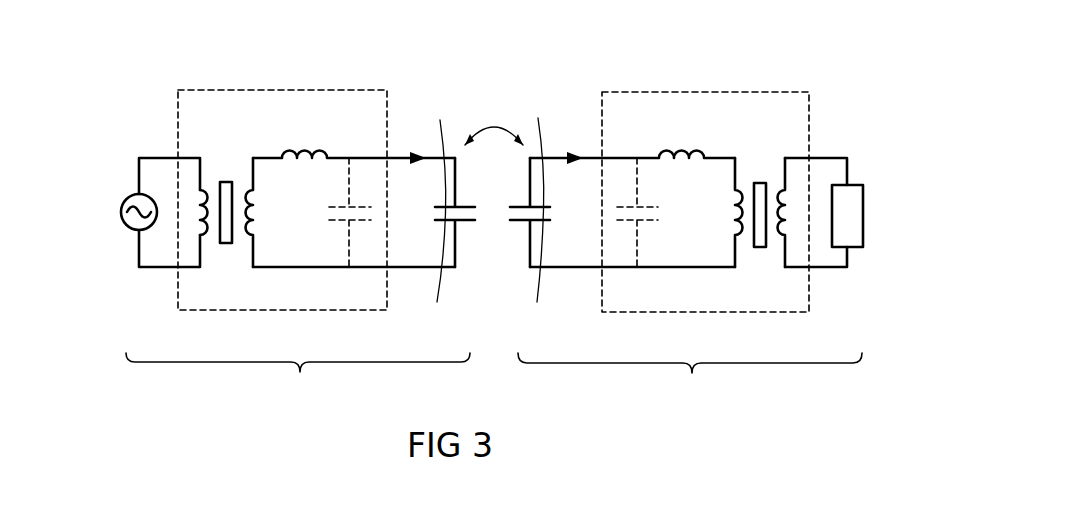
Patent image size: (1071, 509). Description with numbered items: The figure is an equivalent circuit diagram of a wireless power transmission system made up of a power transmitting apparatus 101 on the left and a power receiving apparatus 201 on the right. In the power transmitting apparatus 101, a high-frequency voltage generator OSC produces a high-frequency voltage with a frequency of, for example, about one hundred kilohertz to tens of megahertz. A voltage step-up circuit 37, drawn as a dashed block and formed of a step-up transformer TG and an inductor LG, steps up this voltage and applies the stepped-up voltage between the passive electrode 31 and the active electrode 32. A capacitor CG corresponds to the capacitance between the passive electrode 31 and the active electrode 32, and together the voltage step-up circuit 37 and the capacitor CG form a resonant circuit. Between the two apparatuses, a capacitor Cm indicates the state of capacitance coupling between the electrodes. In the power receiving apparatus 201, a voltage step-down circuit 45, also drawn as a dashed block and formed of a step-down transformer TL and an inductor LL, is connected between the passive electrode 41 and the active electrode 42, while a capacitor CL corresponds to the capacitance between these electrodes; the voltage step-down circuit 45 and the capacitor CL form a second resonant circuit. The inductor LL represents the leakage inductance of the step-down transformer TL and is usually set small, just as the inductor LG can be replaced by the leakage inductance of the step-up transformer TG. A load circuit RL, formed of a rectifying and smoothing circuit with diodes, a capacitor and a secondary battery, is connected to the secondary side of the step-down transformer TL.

The voltage step-up circuit 37 is at (287, 90).
The voltage step-down circuit 45 is at (722, 92).
The active electrode 32 is at (436, 152).
The passive electrode 31 is at (437, 275).
The active electrode 42 is at (540, 151).
The passive electrode 41 is at (539, 273).
The power transmitting apparatus 101 is at (298, 380).
The power receiving apparatus 201 is at (690, 381).
The high-frequency voltage generator OSC is at (131, 212).
The step-up transformer TG is at (228, 161).
The inductor LG is at (354, 192).
The capacitor CG is at (435, 212).
The capacitor Cm is at (494, 122).
The capacitor CL is at (548, 212).
The inductor LL is at (632, 192).
The step-down transformer TL is at (767, 162).
The load circuit RL is at (843, 212).